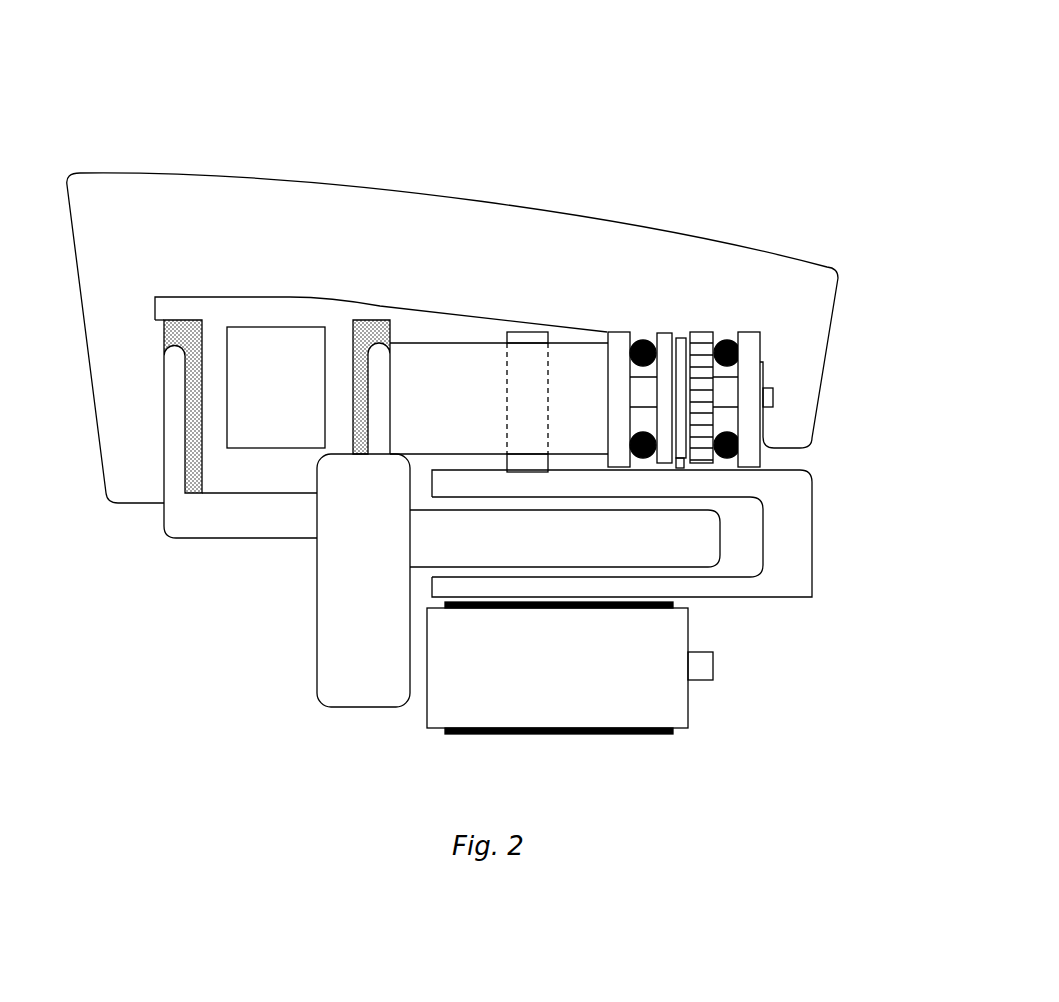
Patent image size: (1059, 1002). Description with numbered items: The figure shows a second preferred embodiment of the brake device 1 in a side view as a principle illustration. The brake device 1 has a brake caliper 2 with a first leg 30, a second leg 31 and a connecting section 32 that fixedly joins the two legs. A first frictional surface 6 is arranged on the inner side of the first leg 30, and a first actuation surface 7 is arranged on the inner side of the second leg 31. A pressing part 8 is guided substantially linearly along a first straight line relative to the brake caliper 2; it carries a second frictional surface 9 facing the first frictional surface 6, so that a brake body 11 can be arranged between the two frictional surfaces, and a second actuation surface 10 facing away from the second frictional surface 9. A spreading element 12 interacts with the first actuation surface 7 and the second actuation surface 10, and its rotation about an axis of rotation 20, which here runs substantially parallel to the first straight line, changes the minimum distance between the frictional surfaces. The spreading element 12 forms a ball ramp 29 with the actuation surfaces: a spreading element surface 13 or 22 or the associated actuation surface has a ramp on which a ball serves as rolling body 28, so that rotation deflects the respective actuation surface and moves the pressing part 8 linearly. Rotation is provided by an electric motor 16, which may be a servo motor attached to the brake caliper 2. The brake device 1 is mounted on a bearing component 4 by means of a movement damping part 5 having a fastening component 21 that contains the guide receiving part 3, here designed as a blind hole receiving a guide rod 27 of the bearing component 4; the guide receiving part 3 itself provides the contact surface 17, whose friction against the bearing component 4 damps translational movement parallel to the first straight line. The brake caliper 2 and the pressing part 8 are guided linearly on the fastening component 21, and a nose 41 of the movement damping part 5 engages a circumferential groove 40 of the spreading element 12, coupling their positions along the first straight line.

The brake device 1 is at (680, 90).
The brake caliper 2 is at (456, 304).
The guide receiving part 3 is at (583, 631).
The bearing component 4 is at (327, 652).
The movement damping part 5 is at (645, 487).
The first frictional surface 6 is at (205, 477).
The first actuation surface 7 is at (730, 377).
The pressing part 8 is at (497, 352).
The second frictional surface 9 is at (350, 352).
The second actuation surface 10 is at (738, 453).
The brake body 11 is at (262, 327).
The spreading element 12 is at (702, 347).
The spreading element surface 13 is at (645, 375).
The electric motor 16 is at (683, 673).
The contact surface 17 is at (443, 498).
The axis of rotation 20 is at (773, 395).
The fastening component 21 is at (583, 631).
The spreading element surface 22 is at (720, 427).
The guide rod 27 is at (665, 542).
The rolling body 28 is at (737, 353).
The ball ramp 29 is at (686, 322).
The first leg 30 is at (105, 377).
The second leg 31 is at (792, 412).
The connecting section 32 is at (187, 182).
The circumferential groove 40 is at (740, 332).
The nose 41 is at (683, 470).